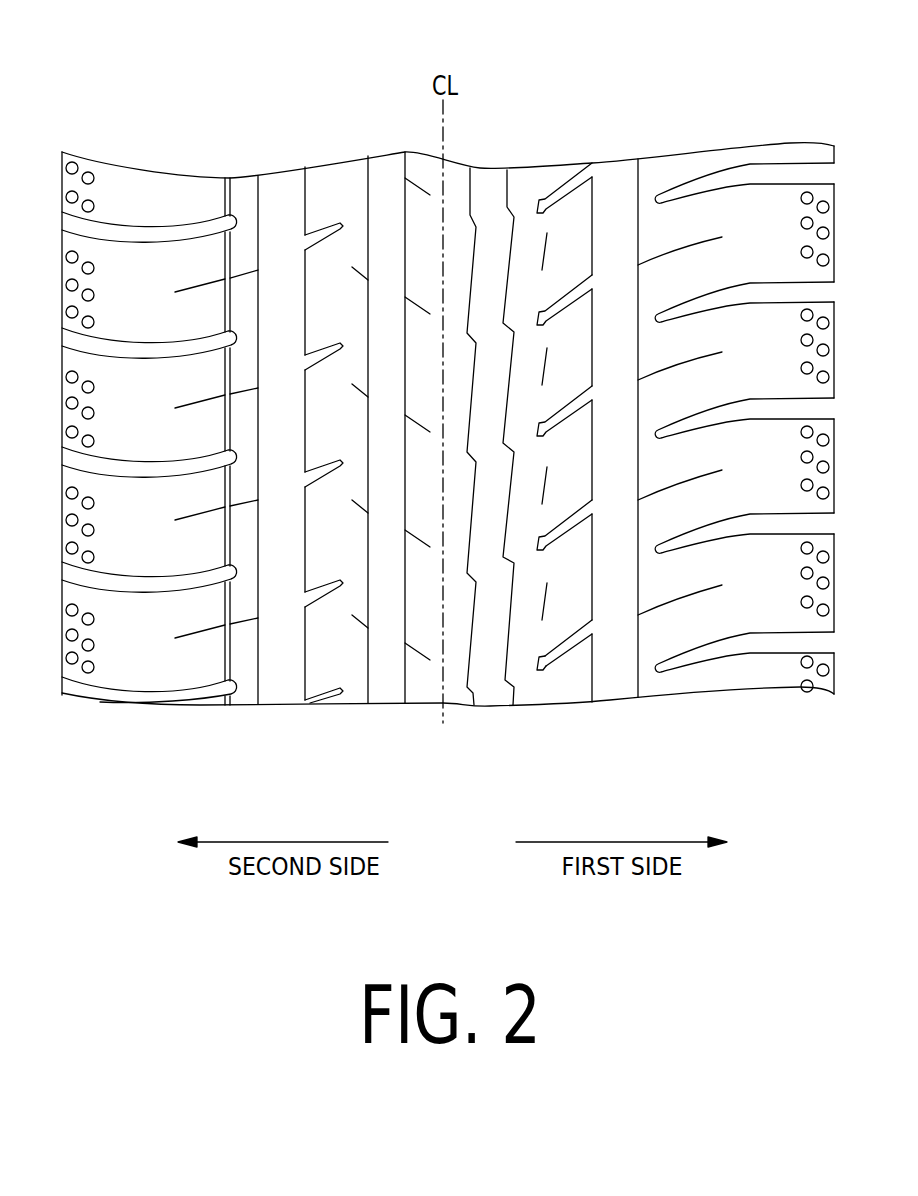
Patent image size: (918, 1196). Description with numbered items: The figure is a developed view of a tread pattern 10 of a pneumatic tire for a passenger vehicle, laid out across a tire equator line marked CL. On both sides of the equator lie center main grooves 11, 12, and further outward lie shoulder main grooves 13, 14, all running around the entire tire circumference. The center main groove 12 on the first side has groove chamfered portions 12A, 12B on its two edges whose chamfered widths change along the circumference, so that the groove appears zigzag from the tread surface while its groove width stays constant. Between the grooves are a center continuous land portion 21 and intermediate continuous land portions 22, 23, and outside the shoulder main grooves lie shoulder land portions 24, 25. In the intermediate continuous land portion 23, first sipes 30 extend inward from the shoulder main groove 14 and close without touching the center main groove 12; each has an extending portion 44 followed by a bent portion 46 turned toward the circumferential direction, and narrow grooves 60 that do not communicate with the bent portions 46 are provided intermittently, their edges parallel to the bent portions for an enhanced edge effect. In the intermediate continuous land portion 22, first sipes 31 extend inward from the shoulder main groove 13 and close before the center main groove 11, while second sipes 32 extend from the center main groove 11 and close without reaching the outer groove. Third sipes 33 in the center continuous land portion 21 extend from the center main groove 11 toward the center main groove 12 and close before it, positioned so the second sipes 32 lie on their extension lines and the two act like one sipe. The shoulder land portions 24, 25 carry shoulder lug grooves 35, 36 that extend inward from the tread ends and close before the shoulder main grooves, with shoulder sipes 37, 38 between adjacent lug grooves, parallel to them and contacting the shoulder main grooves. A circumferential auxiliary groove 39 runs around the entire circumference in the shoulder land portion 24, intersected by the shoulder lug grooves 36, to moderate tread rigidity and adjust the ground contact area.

The tread pattern 10 is at (624, 66).
The center main groove 11 is at (392, 172).
The center main groove 12 is at (495, 456).
The groove chamfered portion 12A is at (508, 707).
The groove chamfered portion 12B is at (463, 550).
The shoulder main groove 13 is at (288, 168).
The shoulder main groove 14 is at (618, 190).
The center continuous land portion 21 is at (417, 456).
The intermediate continuous land portion 22 is at (336, 442).
The intermediate continuous land portion 23 is at (562, 456).
The shoulder land portion 24 is at (149, 450).
The shoulder land portion 25 is at (736, 451).
The first sipe 30 is at (562, 428).
The first sipe 31 is at (330, 222).
The second sipe 32 is at (360, 267).
The third sipe 33 is at (420, 187).
The shoulder lug groove 35 is at (725, 180).
The shoulder lug groove 36 is at (147, 235).
The shoulder sipe 37 is at (668, 248).
The shoulder sipe 38 is at (255, 272).
The circumferential auxiliary groove 39 is at (228, 178).
The extending portion 44 is at (547, 548).
The bent portion 46 is at (540, 672).
The narrow groove 60 is at (551, 483).